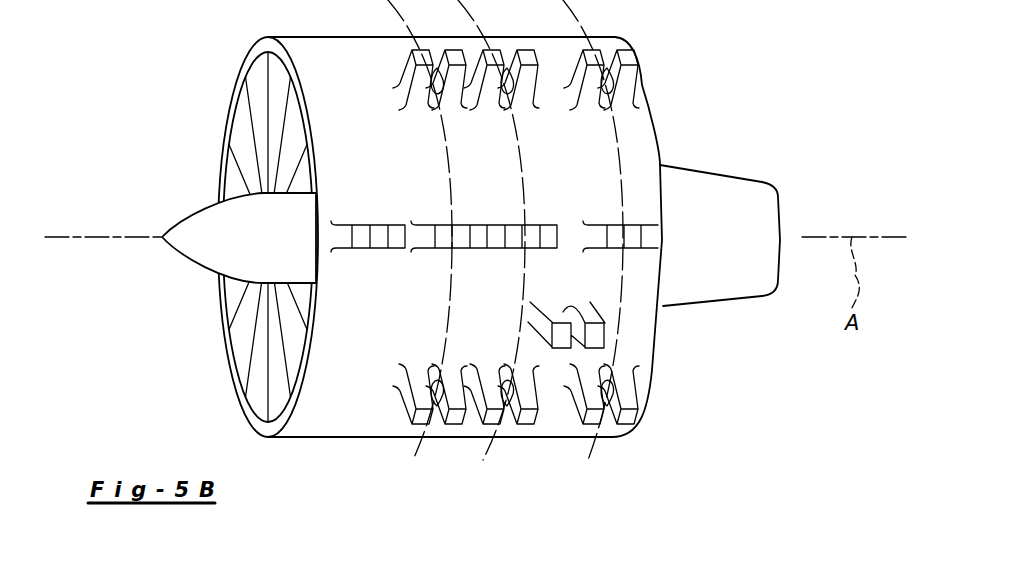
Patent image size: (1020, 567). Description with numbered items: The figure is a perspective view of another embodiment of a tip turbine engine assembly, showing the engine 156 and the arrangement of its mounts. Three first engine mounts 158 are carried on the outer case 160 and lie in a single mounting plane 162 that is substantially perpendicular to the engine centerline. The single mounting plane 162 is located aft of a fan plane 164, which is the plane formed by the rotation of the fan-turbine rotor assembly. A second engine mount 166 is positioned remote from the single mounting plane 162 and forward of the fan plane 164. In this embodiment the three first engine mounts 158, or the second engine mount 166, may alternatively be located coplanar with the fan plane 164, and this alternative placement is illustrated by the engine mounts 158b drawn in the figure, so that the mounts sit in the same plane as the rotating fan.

The engine 156 is at (440, 273).
The first engine mounts 158 is at (663, 237).
The engine mounts 158b is at (537, 87).
The outer case 160 is at (310, 437).
The single mounting plane 162 is at (560, 478).
The fan plane 164 is at (460, 479).
The second engine mount 166 is at (363, 225).